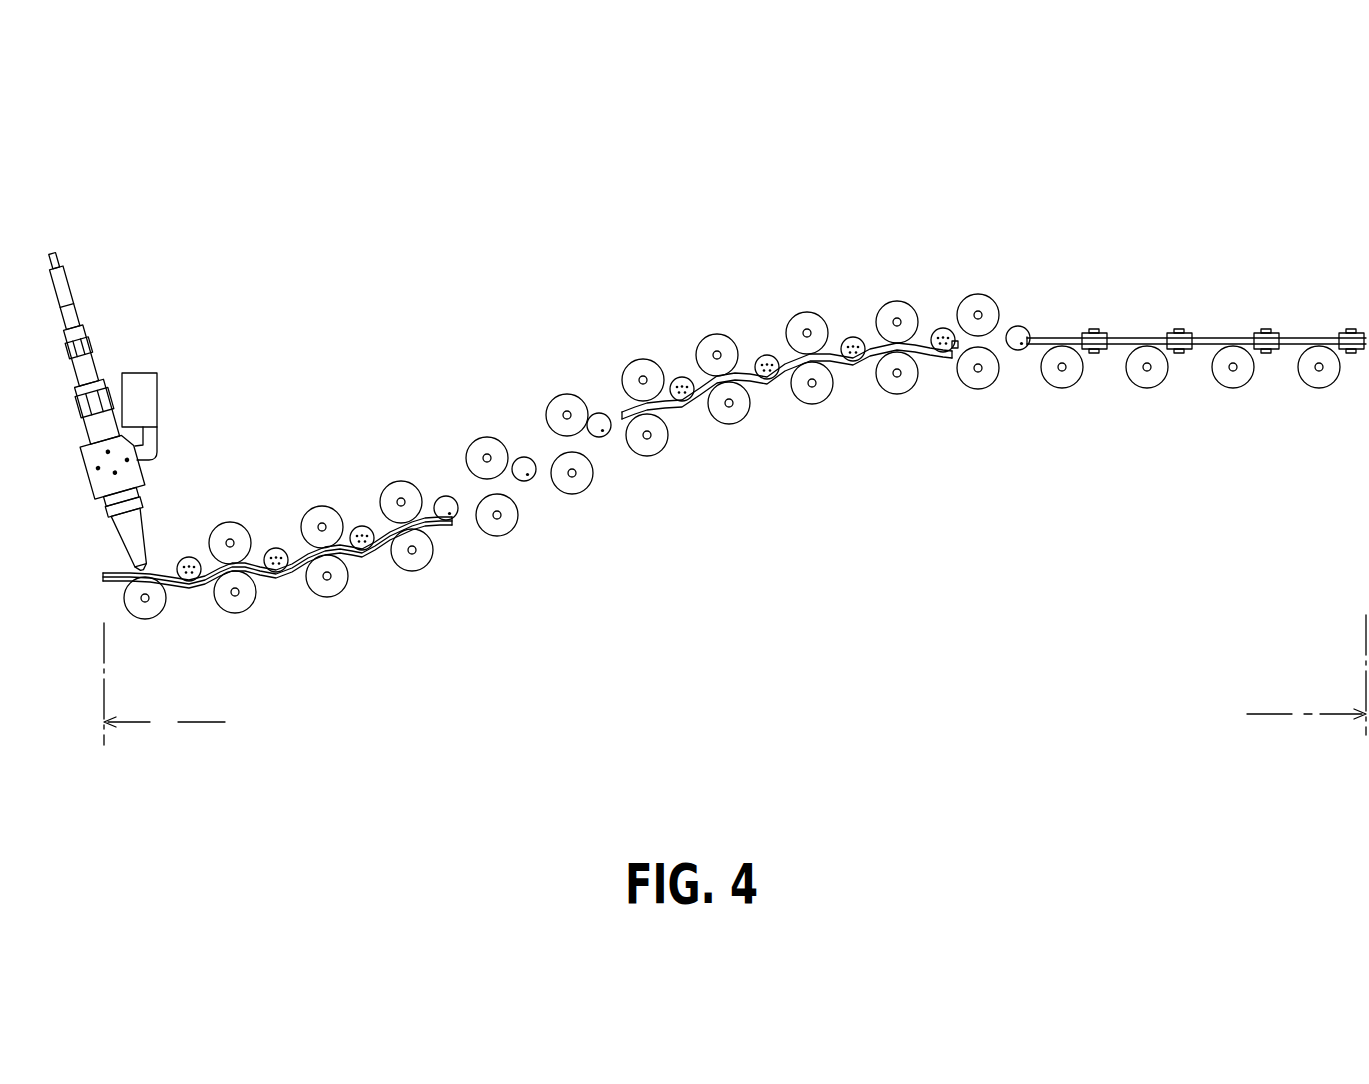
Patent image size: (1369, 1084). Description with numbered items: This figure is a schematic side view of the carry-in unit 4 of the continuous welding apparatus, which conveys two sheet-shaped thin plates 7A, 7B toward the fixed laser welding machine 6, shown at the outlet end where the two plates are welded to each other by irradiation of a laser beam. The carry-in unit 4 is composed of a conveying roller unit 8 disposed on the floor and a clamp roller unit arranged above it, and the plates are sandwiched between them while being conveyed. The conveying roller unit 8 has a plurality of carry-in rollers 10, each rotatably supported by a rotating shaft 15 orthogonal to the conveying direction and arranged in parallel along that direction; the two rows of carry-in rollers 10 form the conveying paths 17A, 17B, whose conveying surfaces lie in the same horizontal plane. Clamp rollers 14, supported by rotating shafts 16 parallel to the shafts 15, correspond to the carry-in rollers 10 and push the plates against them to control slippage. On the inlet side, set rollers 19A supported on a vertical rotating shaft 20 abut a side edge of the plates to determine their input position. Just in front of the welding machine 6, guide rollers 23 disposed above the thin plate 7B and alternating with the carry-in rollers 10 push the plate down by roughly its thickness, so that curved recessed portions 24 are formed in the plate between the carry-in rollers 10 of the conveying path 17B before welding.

The carry-in unit 4 is at (1186, 292).
The laser welding machine 6 is at (66, 298).
The sheet-shaped thin plate 7A is at (872, 340).
The sheet-shaped thin plate 7B is at (853, 366).
The conveying roller unit 8 is at (1074, 405).
The carry-in roller 10 is at (648, 455).
The clamp roller 14 is at (643, 358).
The rotating shaft 15 is at (731, 408).
The rotating shaft 16 is at (718, 353).
The conveying path 17A is at (160, 722).
The conveying path 17B is at (1306, 675).
The set roller 19A is at (1108, 340).
The rotating shaft 20 is at (1093, 330).
The guide roller 23 is at (276, 548).
The recessed portion 24 is at (361, 551).